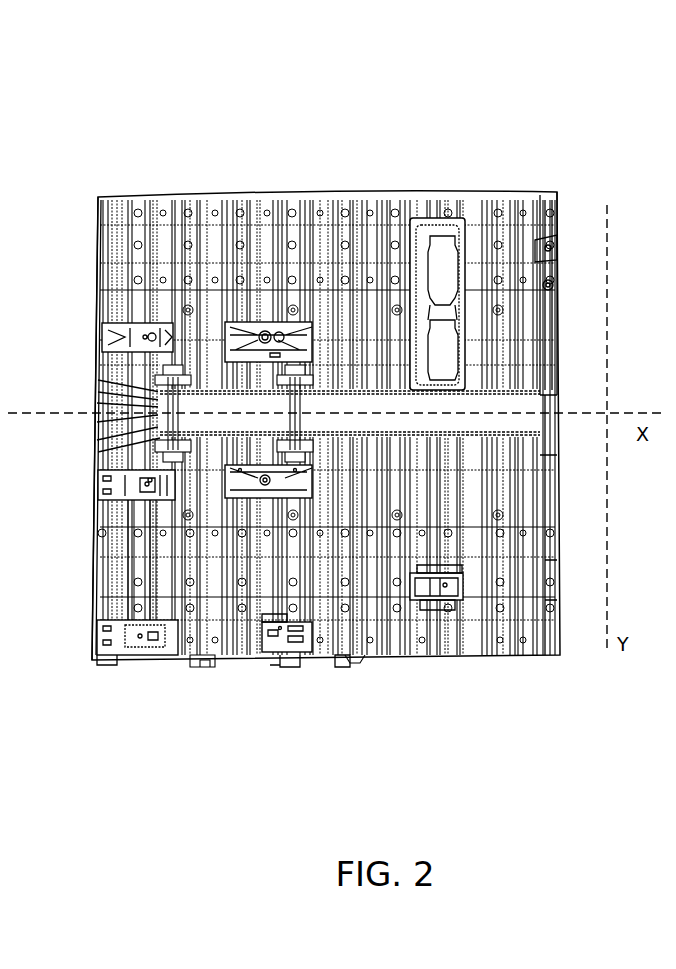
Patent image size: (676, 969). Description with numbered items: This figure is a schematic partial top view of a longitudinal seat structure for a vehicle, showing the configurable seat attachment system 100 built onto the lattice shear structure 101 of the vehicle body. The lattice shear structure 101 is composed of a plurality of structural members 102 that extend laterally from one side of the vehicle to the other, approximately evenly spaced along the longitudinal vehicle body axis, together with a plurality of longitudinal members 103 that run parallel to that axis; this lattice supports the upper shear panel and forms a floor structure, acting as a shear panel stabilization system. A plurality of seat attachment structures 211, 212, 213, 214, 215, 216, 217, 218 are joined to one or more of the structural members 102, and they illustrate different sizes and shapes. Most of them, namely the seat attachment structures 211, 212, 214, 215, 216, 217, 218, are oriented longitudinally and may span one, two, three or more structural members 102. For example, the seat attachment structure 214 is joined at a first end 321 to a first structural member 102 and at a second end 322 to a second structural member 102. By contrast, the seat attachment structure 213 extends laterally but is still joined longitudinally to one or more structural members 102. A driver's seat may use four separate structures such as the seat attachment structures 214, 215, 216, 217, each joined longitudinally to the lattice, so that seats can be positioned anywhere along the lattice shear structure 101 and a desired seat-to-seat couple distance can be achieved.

The configurable seat attachment system 100 is at (128, 148).
The lattice shear structure 101 is at (60, 574).
The structural members 102 is at (244, 208).
The longitudinal members 103 is at (270, 208).
The seat attachment structure 211 is at (118, 343).
The seat attachment structure 212 is at (266, 337).
The seat attachment structure 213 is at (440, 340).
The seat attachment structure 214 is at (142, 505).
The seat attachment structure 215 is at (142, 650).
The seat attachment structure 216 is at (278, 488).
The seat attachment structure 217 is at (290, 632).
The seat attachment structure 218 is at (452, 592).
The first end 321 is at (88, 476).
The second end 322 is at (155, 494).